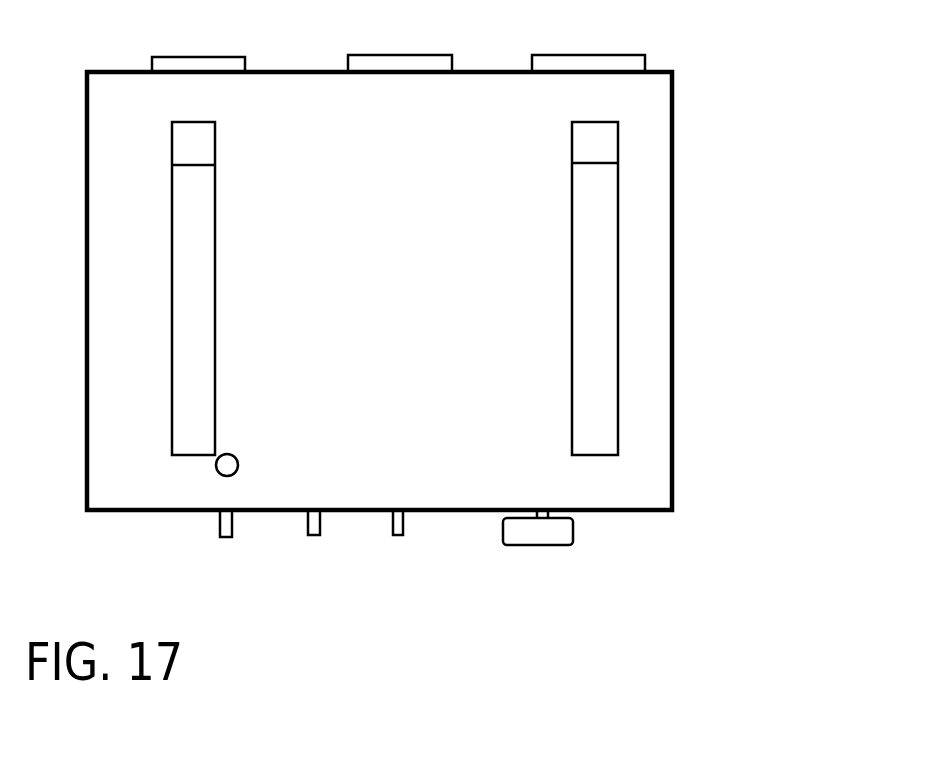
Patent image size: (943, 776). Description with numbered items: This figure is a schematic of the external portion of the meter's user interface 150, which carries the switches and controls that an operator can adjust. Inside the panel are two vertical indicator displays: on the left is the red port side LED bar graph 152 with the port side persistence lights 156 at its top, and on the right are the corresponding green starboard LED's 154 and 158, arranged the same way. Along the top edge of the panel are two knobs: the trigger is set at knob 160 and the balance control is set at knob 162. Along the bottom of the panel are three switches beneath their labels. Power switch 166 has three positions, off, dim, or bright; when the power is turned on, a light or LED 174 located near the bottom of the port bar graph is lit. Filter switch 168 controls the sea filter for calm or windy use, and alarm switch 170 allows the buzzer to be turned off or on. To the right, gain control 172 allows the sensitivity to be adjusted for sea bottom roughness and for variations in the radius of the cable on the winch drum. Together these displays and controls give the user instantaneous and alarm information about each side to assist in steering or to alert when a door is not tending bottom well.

The user interface 150 is at (673, 183).
The port side LED bar graph 152 is at (215, 198).
The starboard LED's 154 is at (572, 209).
The port side persistence lights 156 is at (215, 138).
The starboard LED's 158 is at (572, 142).
The knob 160 is at (183, 56).
The knob 162 is at (578, 55).
The power switch 166 is at (221, 538).
The filter switch 168 is at (308, 536).
The alarm switch 170 is at (398, 537).
The gain control 172 is at (510, 546).
The light or LED 174 is at (214, 457).